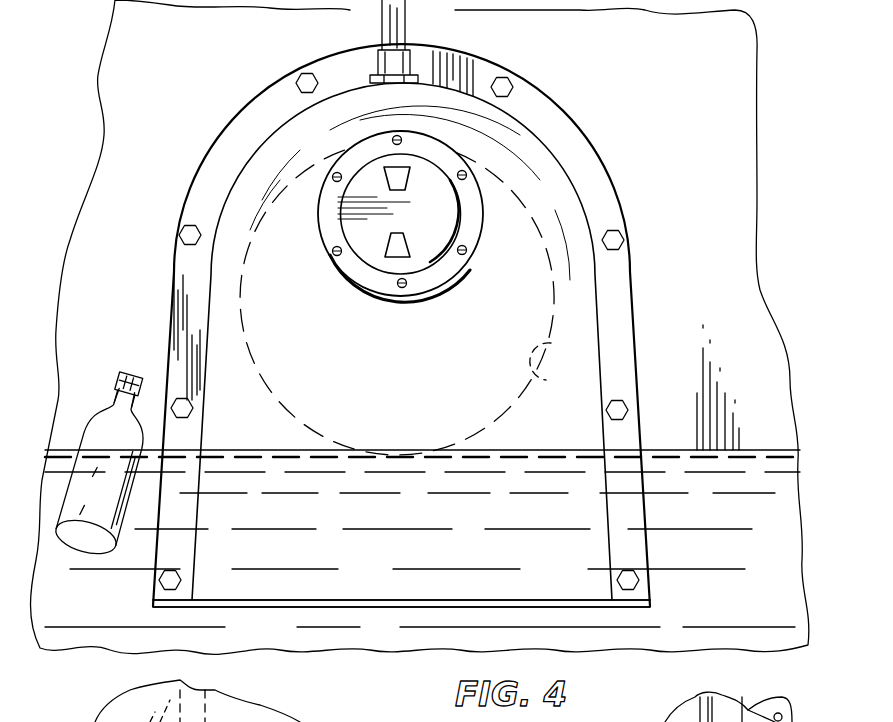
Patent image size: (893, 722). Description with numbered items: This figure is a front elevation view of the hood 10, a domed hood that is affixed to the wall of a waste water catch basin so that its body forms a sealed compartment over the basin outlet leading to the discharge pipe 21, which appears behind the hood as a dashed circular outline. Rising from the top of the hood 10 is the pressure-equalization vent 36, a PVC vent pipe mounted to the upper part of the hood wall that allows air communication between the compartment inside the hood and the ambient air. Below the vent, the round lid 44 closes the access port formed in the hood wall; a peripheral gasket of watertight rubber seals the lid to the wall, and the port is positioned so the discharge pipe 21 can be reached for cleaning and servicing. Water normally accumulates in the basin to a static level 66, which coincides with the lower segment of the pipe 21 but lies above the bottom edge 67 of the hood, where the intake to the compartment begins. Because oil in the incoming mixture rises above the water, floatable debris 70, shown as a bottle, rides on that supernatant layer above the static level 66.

The hood 10 is at (640, 198).
The discharge pipe 21 is at (550, 453).
The pressure-equalization vent 36 is at (398, 16).
The lid 44 is at (432, 225).
The static level 66 is at (408, 452).
The bottom edge 67 is at (396, 607).
The floatable debris 70 is at (115, 403).